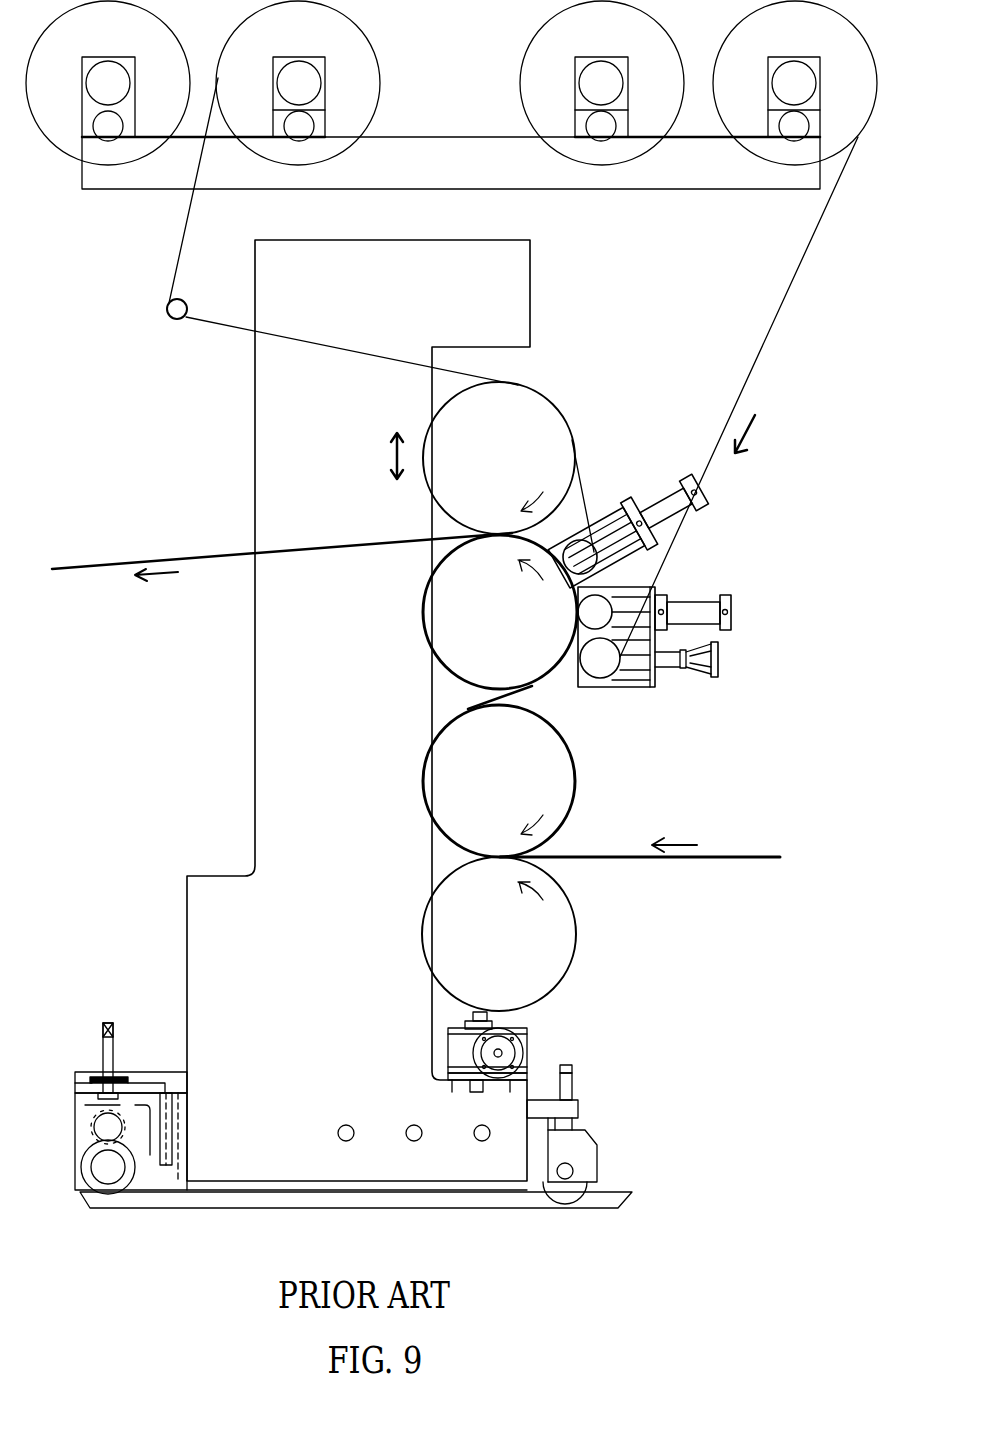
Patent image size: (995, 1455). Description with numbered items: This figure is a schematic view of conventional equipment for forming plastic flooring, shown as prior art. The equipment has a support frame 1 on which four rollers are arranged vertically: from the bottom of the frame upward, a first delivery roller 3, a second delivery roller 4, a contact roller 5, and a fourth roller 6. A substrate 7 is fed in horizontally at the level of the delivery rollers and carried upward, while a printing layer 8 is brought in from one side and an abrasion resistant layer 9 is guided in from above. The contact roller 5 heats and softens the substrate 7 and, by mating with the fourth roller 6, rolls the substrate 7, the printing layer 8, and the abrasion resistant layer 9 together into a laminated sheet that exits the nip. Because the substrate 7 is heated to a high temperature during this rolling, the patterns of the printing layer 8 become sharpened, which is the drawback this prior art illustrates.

The support frame 1 is at (266, 443).
The first delivery roller 3 is at (563, 935).
The second delivery roller 4 is at (562, 789).
The contact roller 5 is at (440, 612).
The fourth roller 6 is at (440, 440).
The substrate 7 is at (748, 856).
The printing layer 8 is at (757, 352).
The abrasion resistant layer 9 is at (222, 331).